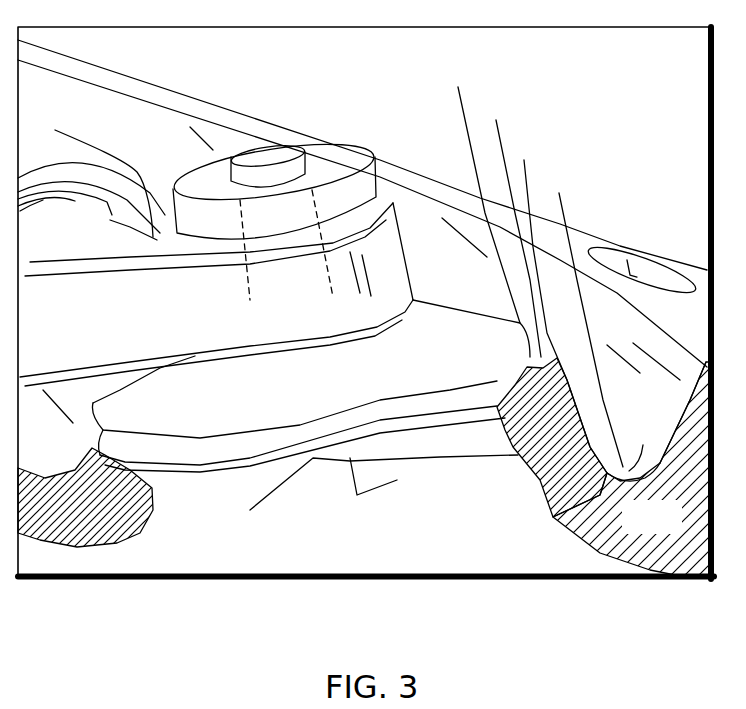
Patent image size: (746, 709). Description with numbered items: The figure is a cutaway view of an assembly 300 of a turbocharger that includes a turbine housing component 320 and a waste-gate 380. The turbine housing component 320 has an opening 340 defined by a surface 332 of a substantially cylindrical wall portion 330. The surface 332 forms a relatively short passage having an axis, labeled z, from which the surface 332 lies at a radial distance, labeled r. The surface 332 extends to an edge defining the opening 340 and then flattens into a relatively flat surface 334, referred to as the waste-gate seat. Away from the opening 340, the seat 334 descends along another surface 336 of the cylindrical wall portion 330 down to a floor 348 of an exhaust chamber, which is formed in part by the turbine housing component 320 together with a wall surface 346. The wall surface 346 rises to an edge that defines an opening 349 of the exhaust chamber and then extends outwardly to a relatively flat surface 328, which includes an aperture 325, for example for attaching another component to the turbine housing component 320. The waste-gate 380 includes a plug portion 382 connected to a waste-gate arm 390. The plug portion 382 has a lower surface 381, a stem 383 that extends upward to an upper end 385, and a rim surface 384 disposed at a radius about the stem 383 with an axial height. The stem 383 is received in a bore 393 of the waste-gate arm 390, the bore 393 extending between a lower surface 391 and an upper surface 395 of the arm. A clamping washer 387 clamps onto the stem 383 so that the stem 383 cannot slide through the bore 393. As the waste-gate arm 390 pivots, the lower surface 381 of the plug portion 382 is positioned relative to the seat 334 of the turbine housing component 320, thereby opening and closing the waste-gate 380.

The assembly 300 is at (694, 72).
The turbine housing component 320 is at (677, 532).
The aperture 325 is at (663, 253).
The relatively flat surface 328 is at (251, 117).
The substantially cylindrical wall portion 330 is at (127, 480).
The surface 332 is at (251, 504).
The relatively flat surface 334 is at (496, 120).
The surface 336 is at (524, 160).
The opening 340 is at (500, 547).
The wall surface 346 is at (487, 300).
The floor 348 is at (559, 193).
The opening 349 is at (458, 87).
The waste-gate 380 is at (346, 84).
The lower surface 381 is at (513, 500).
The plug portion 382 is at (340, 392).
The stem 383 is at (300, 146).
The rim surface 384 is at (457, 400).
The upper end 385 is at (270, 157).
The clamping washer 387 is at (187, 187).
The waste-gate arm 390 is at (97, 332).
The lower surface 391 is at (247, 372).
The bore 393 is at (247, 308).
The upper surface 395 is at (112, 212).